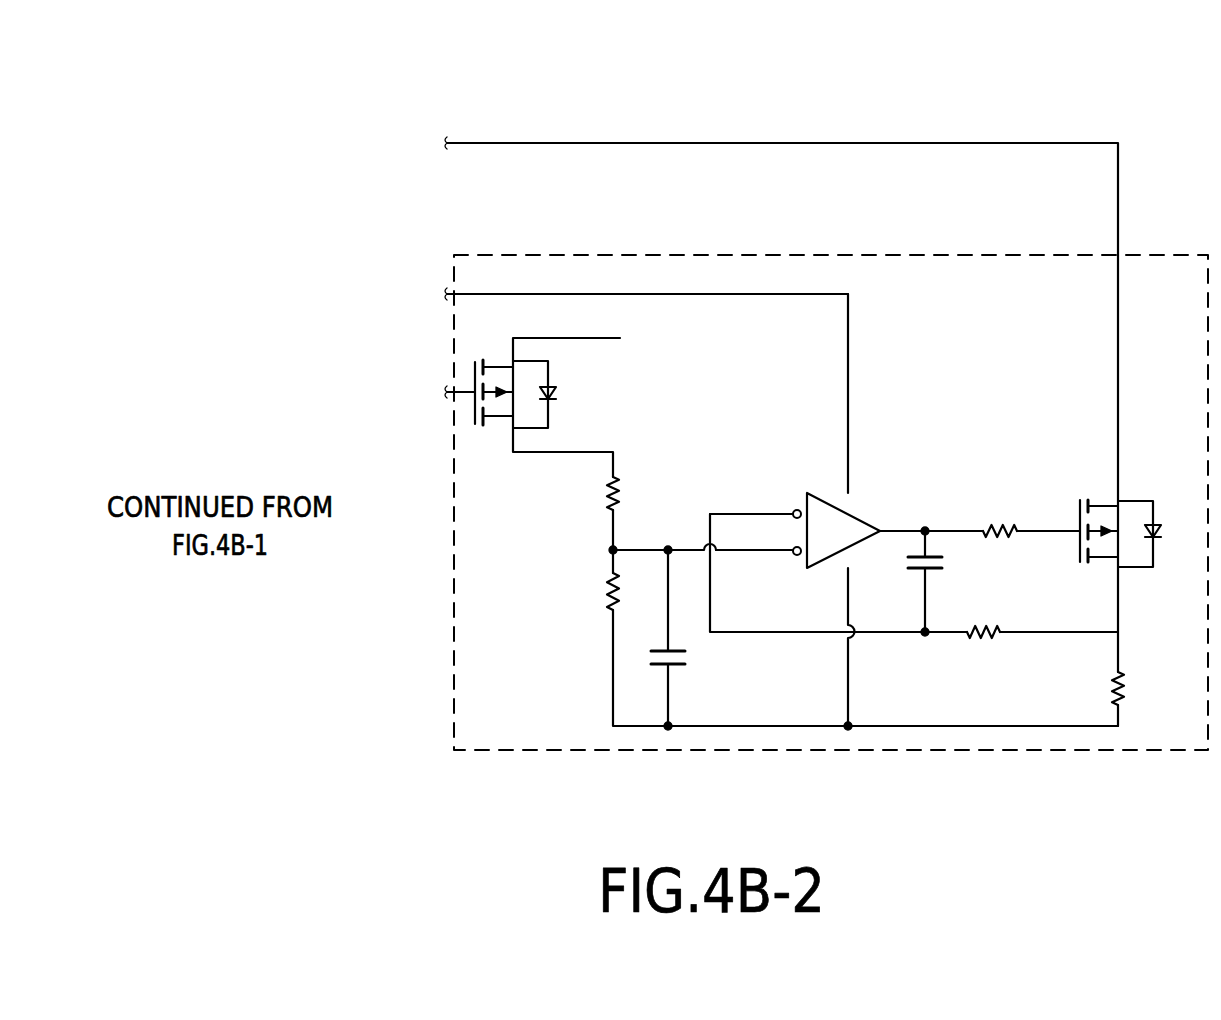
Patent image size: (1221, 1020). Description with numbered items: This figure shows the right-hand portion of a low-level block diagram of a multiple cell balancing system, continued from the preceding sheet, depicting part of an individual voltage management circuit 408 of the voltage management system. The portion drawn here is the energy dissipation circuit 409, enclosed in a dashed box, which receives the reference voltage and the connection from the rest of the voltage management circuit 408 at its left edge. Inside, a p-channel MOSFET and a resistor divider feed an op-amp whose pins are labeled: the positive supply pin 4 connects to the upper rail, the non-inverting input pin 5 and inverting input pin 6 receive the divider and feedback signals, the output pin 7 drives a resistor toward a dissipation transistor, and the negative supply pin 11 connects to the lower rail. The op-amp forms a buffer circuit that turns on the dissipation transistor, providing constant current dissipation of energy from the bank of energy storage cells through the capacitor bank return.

The individual voltage management circuit 408 is at (420, 118).
The energy dissipation circuit 409 is at (1154, 256).
The op-amp positive supply pin 4 is at (833, 393).
The op-amp non-inverting input pin 5 is at (758, 539).
The op-amp inverting input pin 6 is at (755, 502).
The op-amp output pin 7 is at (902, 516).
The op-amp negative supply pin 11 is at (836, 647).